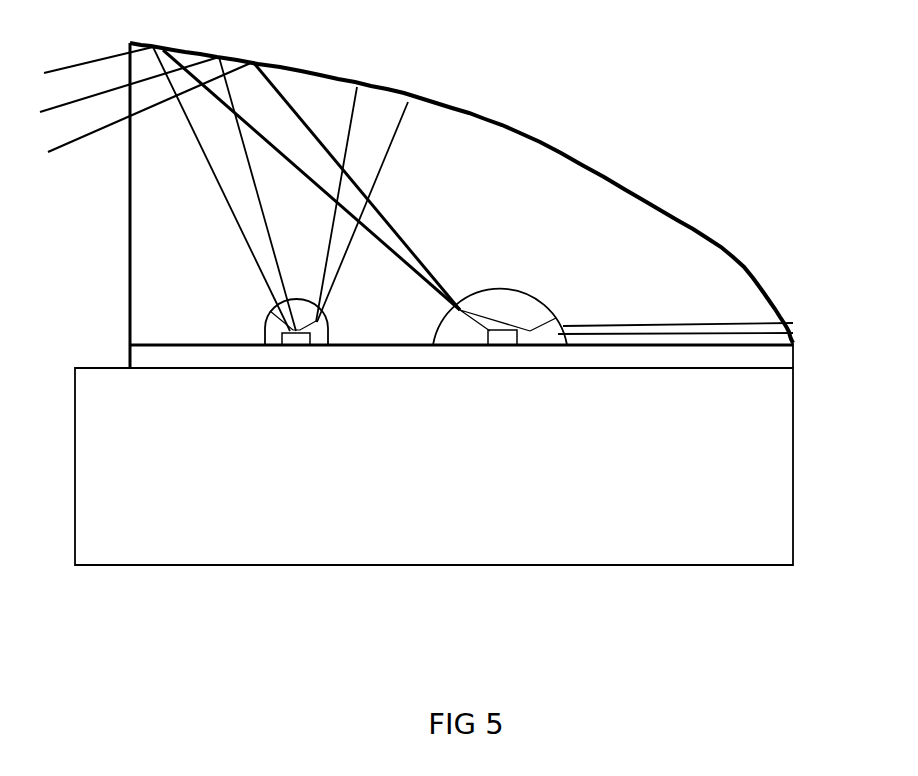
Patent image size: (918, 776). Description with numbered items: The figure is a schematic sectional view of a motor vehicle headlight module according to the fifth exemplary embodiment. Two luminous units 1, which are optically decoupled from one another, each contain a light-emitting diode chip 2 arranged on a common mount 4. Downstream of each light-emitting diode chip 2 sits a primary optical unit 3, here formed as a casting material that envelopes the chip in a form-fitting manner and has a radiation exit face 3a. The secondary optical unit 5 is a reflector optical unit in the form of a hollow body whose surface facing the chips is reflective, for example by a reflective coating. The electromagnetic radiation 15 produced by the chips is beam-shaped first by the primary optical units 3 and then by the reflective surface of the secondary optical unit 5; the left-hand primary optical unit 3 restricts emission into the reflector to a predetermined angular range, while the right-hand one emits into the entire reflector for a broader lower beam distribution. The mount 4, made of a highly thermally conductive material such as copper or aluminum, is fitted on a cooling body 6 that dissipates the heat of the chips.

The luminous unit 1 is at (385, 228).
The light-emitting diode chip 2 is at (265, 338).
The primary optical unit 3 is at (295, 307).
The radiation exit face 3a is at (262, 323).
The mount 4 is at (780, 360).
The secondary optical unit 5 is at (568, 153).
The cooling body 6 is at (780, 452).
The electromagnetic radiation 15 is at (225, 212).